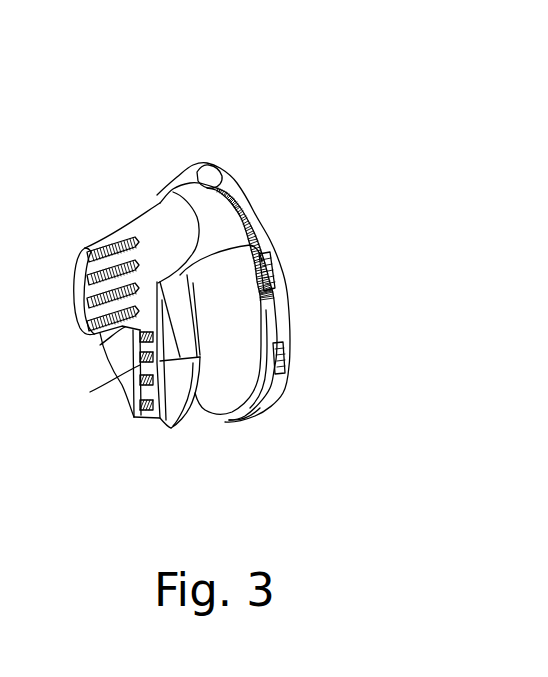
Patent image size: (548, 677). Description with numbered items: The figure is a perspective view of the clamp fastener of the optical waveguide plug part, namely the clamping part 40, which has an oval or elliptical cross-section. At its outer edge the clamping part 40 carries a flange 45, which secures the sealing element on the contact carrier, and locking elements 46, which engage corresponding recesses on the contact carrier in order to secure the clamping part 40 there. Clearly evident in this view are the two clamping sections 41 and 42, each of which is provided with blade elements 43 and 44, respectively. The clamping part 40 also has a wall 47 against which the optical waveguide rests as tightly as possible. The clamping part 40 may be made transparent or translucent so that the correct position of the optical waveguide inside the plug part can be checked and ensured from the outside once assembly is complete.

The clamping part 40 is at (238, 158).
The clamping section 41 is at (256, 250).
The clamping section 42 is at (196, 390).
The blade elements 43 is at (78, 275).
The blade elements 44 is at (120, 383).
The flange 45 is at (176, 183).
The locking elements 46 is at (270, 257).
The wall 47 is at (100, 345).